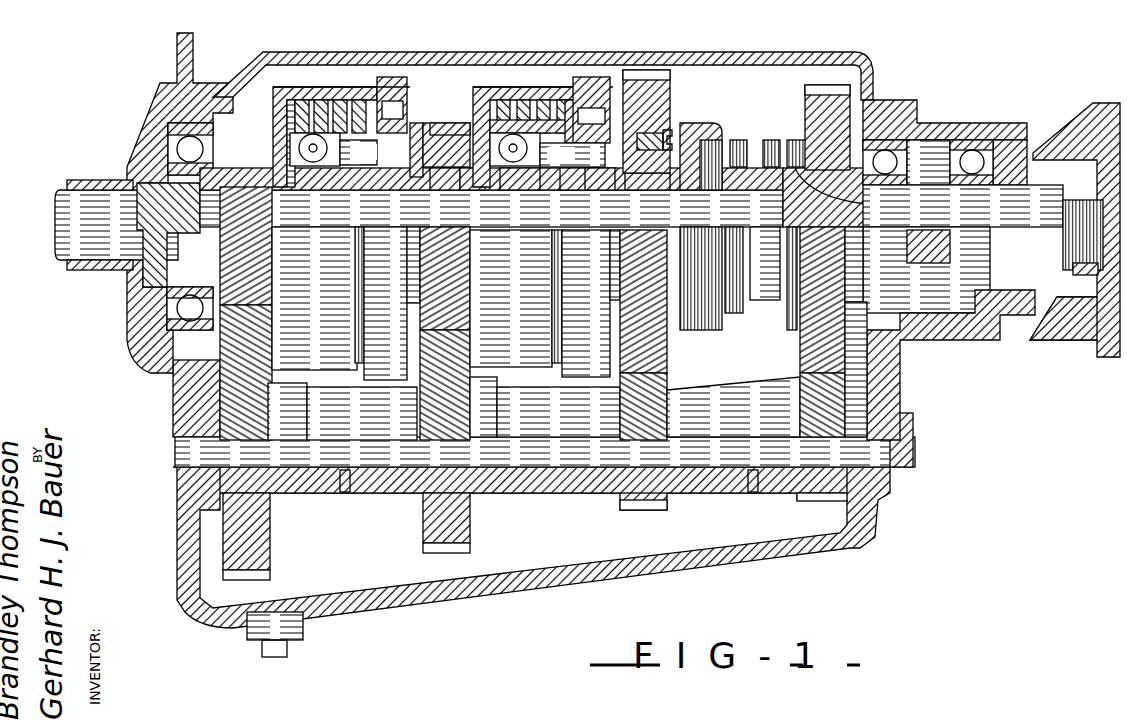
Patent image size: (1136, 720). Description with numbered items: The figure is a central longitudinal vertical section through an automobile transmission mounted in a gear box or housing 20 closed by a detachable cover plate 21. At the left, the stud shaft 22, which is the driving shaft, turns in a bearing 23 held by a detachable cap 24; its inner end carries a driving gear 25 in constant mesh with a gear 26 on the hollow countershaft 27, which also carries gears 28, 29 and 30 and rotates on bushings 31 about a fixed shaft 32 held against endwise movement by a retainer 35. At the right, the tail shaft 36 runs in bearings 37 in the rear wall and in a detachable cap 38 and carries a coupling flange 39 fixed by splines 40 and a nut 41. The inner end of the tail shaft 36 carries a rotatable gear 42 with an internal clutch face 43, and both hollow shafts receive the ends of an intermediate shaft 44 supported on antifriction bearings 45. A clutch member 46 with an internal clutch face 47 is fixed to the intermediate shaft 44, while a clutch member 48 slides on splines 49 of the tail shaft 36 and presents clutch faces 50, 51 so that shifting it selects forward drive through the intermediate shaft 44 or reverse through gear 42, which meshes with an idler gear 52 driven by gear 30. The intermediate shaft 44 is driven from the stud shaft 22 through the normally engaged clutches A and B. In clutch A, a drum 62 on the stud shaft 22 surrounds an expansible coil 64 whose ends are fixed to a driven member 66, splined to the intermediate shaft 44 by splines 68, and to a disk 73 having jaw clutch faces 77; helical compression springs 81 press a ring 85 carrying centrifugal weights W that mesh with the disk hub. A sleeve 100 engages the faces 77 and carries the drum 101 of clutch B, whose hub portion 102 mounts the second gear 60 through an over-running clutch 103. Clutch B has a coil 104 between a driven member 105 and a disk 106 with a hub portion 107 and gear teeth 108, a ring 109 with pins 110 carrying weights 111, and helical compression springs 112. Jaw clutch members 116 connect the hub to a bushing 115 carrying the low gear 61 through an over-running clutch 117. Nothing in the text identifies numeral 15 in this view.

The main shaft 15 is at (390, 193).
The housing 20 is at (183, 548).
The cover plate 21 is at (318, 52).
The stud shaft 22 is at (68, 212).
The bearing 23 is at (172, 300).
The cap 24 is at (147, 146).
The driving gear 25 is at (224, 155).
The gear 26 is at (262, 557).
The countershaft 27 is at (390, 481).
The gear 28 is at (470, 533).
The gear 29 is at (651, 510).
The gear 30 is at (822, 501).
The bushings 31 is at (345, 481).
The shaft 32 is at (190, 440).
The retainer 35 is at (903, 416).
The tail shaft 36 is at (963, 249).
The bearings 37 is at (903, 148).
The cap 38 is at (962, 124).
The coupling 39 is at (1060, 146).
The splines 40 is at (1050, 252).
The nut 41 is at (1085, 300).
The gear 42 is at (847, 86).
The internal clutch face 43 is at (790, 140).
The intermediate shaft 44 is at (379, 222).
The antifriction bearings 45 is at (745, 170).
The clutch member 46 is at (702, 123).
The internal clutch face 47 is at (716, 142).
The clutch member 48 is at (737, 313).
The splines 49 is at (870, 200).
The clutch face 50 is at (712, 330).
The clutch face 51 is at (790, 330).
The idler gear 52 is at (805, 376).
The second gear 60 is at (446, 125).
The low gear 61 is at (648, 72).
The drum 62 is at (372, 86).
The coil 64 is at (300, 87).
The driven member 66 is at (320, 190).
The splines 68 is at (358, 152).
The disk 73 is at (392, 105).
The jaw clutch faces 77 is at (410, 190).
The helical compression springs 81 is at (296, 148).
The ring 85 is at (328, 100).
The sleeve 100 is at (447, 190).
The drum 101 is at (537, 87).
The hub portion 102 is at (465, 185).
The over-running clutch 103 is at (438, 123).
The coil 104 is at (545, 95).
The driven member 105 is at (502, 120).
The disk 106 is at (591, 110).
The hub portion 107 is at (565, 182).
The gear teeth 108 is at (592, 180).
The ring 109 is at (531, 178).
The pins 110 is at (572, 155).
The weights 111 is at (603, 100).
The helical compression springs 112 is at (511, 166).
The bushing 115 is at (640, 186).
The jaw clutch members 116 is at (603, 233).
The over-running clutch 117 is at (666, 130).
The clutch A is at (352, 72).
The clutch B is at (522, 79).
The centrifugal weights W is at (416, 125).